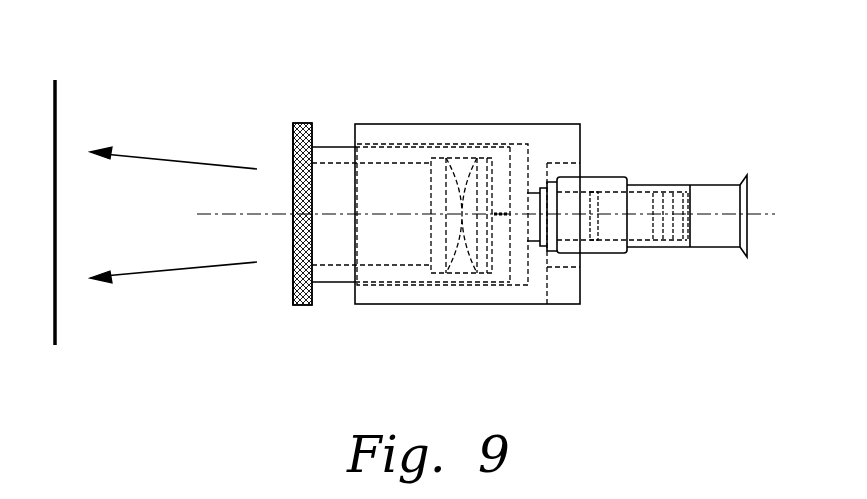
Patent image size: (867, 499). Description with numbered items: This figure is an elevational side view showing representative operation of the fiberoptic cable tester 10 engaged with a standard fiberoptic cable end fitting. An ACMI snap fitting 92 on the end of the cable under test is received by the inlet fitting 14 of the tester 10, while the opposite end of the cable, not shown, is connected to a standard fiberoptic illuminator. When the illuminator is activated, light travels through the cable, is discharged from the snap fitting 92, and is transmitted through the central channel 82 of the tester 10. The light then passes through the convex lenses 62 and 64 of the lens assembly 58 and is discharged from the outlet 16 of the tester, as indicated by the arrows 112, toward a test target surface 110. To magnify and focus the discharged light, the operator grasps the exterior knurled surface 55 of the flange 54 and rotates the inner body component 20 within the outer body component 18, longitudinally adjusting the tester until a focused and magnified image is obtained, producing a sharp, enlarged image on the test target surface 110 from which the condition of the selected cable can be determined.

The fiberoptic cable tester 10 is at (438, 132).
The inlet fitting 14 is at (580, 170).
The outlet 16 is at (292, 260).
The outer body component 18 is at (580, 124).
The inner body component 20 is at (335, 147).
The flange 54 is at (299, 306).
The exterior knurled surface 55 is at (294, 122).
The lens assembly 58 is at (430, 245).
The convex lens 62 is at (497, 183).
The convex lens 64 is at (430, 193).
The central channel 82 is at (384, 240).
The ACMI snap fitting 92 is at (705, 180).
The test target surface 110 is at (57, 310).
The arrows 112 is at (155, 157).